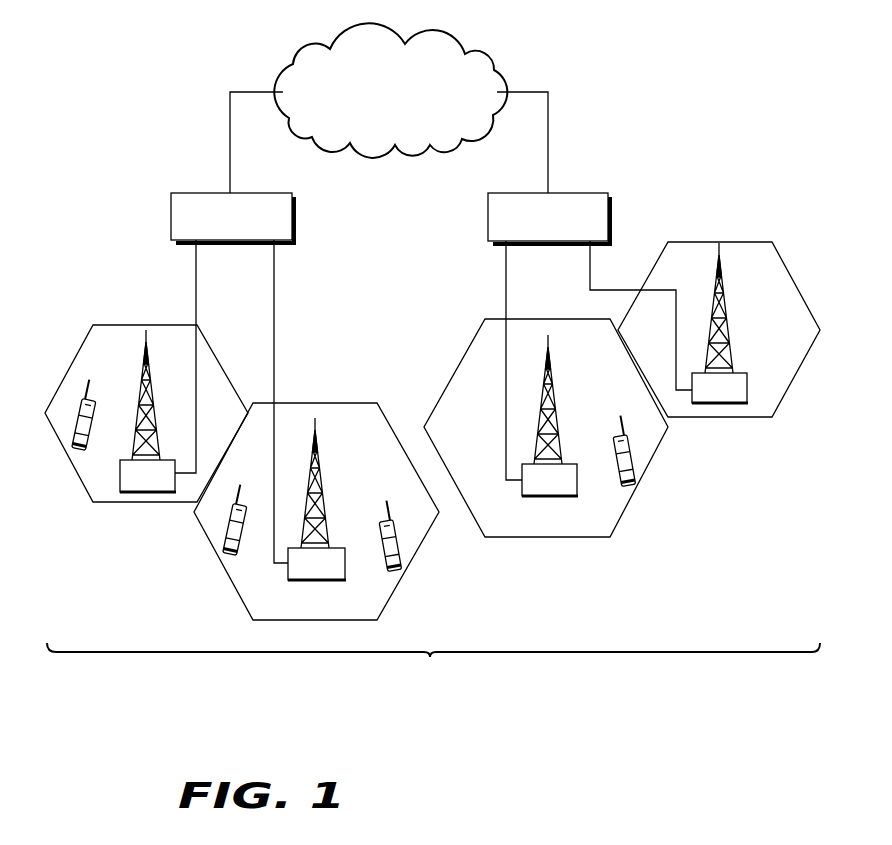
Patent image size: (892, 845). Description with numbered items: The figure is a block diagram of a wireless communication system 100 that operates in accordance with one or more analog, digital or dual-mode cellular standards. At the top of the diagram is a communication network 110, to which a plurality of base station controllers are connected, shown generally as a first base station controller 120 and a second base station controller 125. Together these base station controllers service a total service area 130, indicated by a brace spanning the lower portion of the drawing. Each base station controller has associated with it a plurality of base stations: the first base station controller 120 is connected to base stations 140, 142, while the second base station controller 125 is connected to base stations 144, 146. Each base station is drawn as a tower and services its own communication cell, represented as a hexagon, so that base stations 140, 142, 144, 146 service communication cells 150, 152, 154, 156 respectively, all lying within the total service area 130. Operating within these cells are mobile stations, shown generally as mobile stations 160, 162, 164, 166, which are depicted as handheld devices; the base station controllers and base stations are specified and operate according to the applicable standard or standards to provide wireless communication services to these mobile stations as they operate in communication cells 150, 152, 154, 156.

The wireless communication system 100 is at (287, 741).
The communication network 110 is at (387, 37).
The base station controller 120 is at (196, 192).
The base station controller 125 is at (582, 192).
The total service area 130 is at (433, 664).
The base station 140 is at (151, 367).
The base station 142 is at (321, 460).
The base station 144 is at (554, 373).
The base station 146 is at (729, 336).
The communication cell 150 is at (125, 324).
The communication cell 152 is at (345, 402).
The communication cell 154 is at (556, 538).
The communication cell 156 is at (726, 418).
The mobile station 160 is at (93, 393).
The mobile station 162 is at (242, 487).
The mobile station 164 is at (381, 513).
The mobile station 166 is at (614, 428).